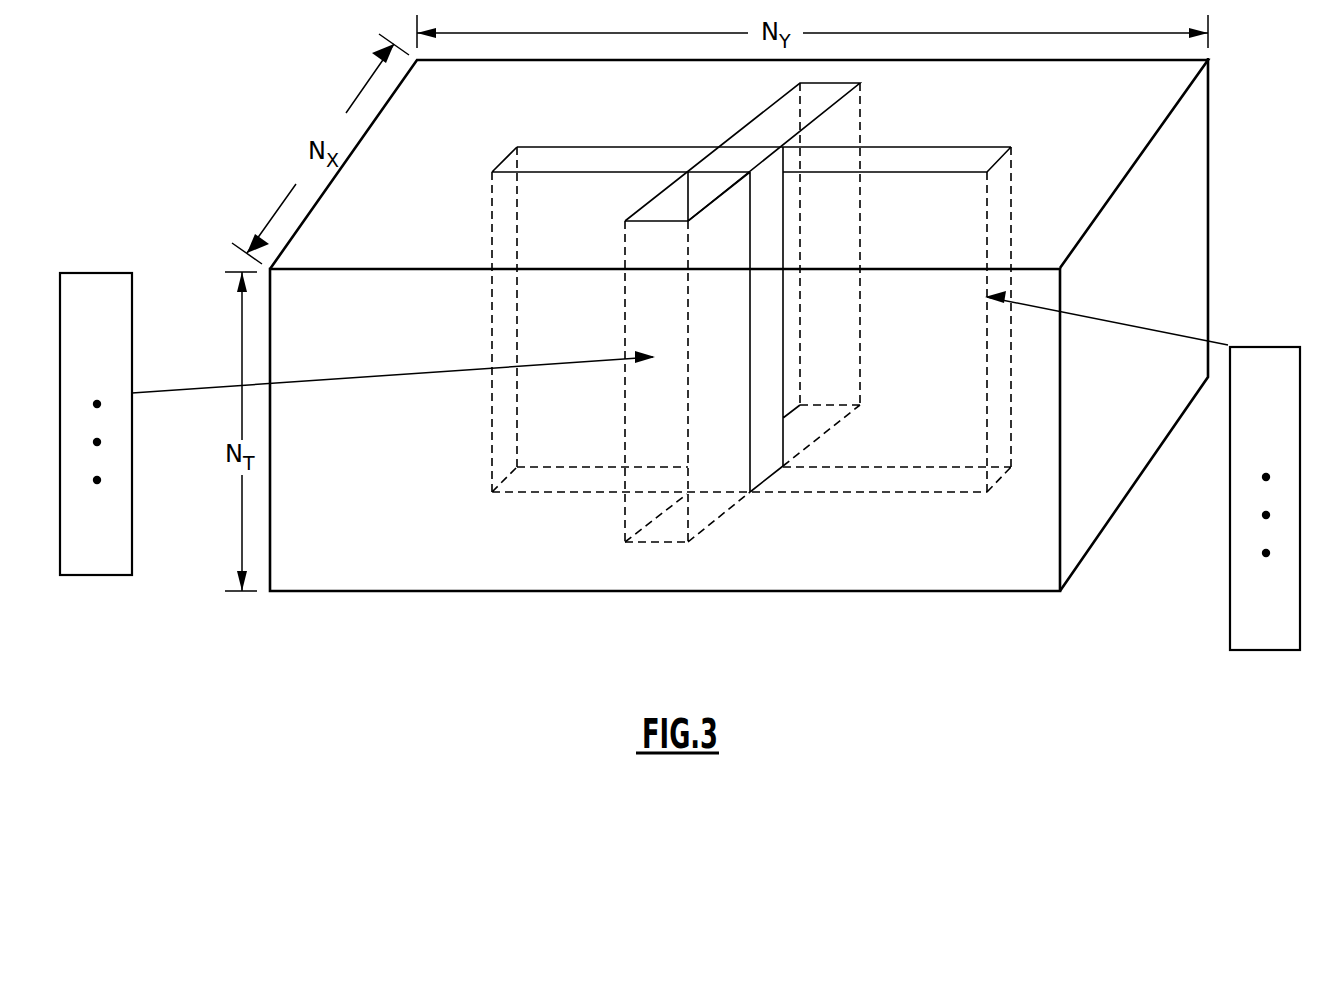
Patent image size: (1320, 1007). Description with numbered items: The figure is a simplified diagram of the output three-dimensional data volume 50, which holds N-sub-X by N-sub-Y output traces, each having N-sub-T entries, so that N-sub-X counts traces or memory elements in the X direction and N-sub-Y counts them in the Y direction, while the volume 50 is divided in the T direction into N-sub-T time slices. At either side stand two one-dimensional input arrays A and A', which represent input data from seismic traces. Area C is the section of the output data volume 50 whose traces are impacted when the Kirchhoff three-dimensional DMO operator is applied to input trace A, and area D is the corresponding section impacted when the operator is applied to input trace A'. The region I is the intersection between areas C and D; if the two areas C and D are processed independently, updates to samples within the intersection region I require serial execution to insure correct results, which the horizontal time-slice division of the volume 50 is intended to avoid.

The output 3D data volume 50 is at (409, 579).
The input array A is at (357, 410).
The input array A' is at (1142, 470).
The area C is at (742, 312).
The area D is at (751, 319).
The intersection region I is at (687, 357).